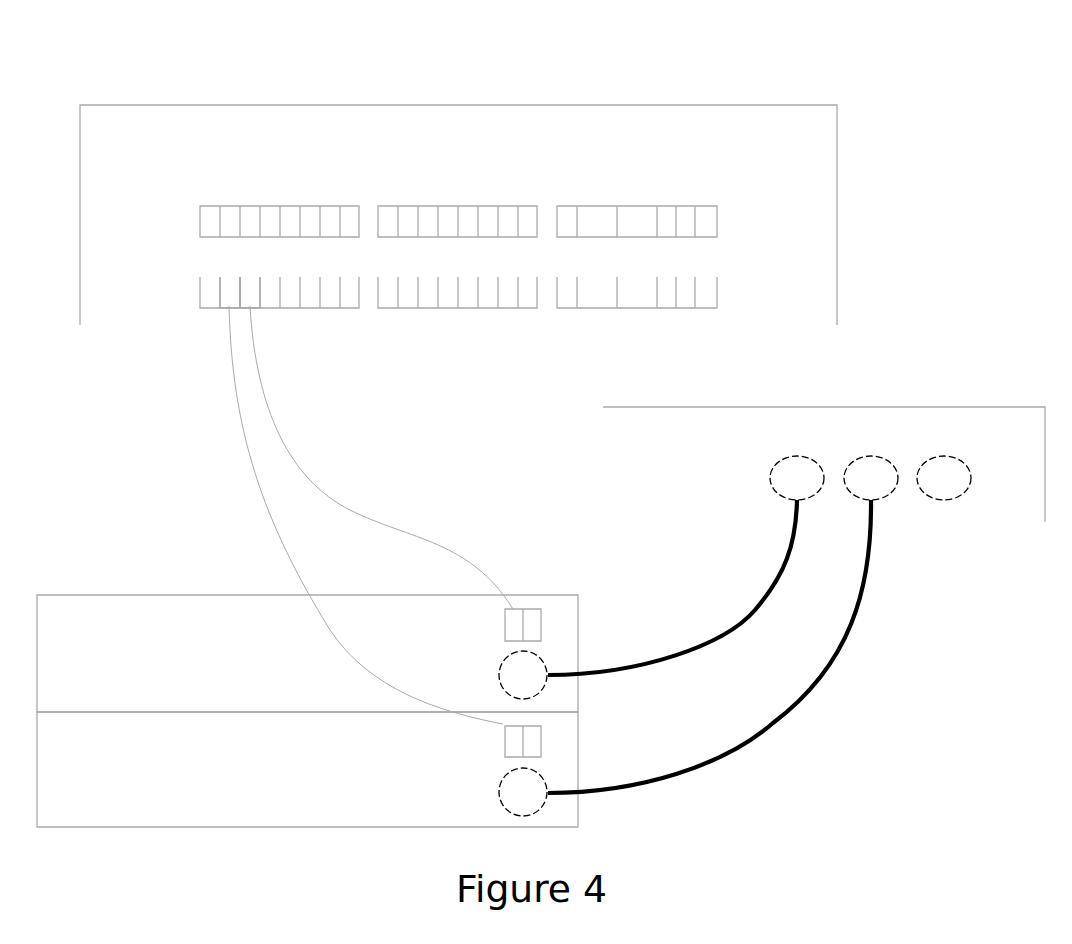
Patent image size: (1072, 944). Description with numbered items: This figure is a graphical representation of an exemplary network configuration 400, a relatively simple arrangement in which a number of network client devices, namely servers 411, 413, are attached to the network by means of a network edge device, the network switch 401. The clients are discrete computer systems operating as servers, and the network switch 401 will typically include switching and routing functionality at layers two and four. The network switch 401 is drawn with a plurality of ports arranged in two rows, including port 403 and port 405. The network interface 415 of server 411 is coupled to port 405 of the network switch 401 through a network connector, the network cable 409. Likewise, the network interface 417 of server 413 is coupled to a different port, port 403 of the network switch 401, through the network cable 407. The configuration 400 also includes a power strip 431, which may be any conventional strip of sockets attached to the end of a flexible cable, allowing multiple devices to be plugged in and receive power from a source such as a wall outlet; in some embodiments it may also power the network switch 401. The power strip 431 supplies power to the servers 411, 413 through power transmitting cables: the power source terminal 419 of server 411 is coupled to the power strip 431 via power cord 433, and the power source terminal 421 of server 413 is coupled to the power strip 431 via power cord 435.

The exemplary network configuration 400 is at (951, 51).
The network switch 401 is at (477, 134).
The port 403 is at (230, 268).
The port 405 is at (250, 268).
The network cable 407 is at (234, 468).
The network cable 409 is at (355, 499).
The server 411 is at (185, 650).
The server 413 is at (185, 769).
The network interface 415 is at (496, 625).
The network interface 417 is at (496, 740).
The power source terminal 419 is at (490, 677).
The power source terminal 421 is at (490, 792).
The power strip 431 is at (848, 440).
The power cord 433 is at (731, 622).
The power cord 435 is at (849, 660).